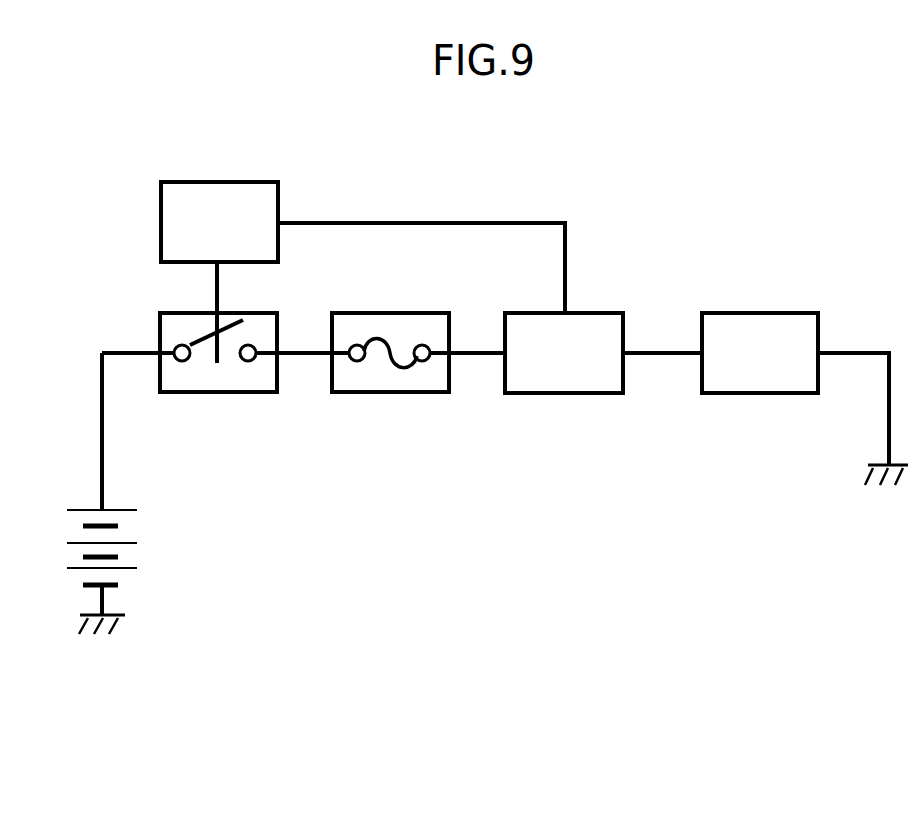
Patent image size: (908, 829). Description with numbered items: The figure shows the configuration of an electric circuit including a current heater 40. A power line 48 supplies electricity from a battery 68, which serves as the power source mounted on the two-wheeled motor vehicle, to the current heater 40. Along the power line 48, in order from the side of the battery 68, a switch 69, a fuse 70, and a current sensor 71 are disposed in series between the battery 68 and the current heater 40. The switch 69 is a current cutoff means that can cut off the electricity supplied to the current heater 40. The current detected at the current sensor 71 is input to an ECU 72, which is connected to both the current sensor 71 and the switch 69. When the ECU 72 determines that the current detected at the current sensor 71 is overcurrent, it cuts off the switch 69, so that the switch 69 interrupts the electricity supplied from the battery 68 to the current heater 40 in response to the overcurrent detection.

The ECU 72 is at (247, 188).
The switch 69 is at (218, 385).
The fuse 70 is at (393, 385).
The current sensor 71 is at (573, 383).
The power line 48 is at (653, 350).
The current heater 40 is at (765, 378).
The battery 68 is at (83, 508).